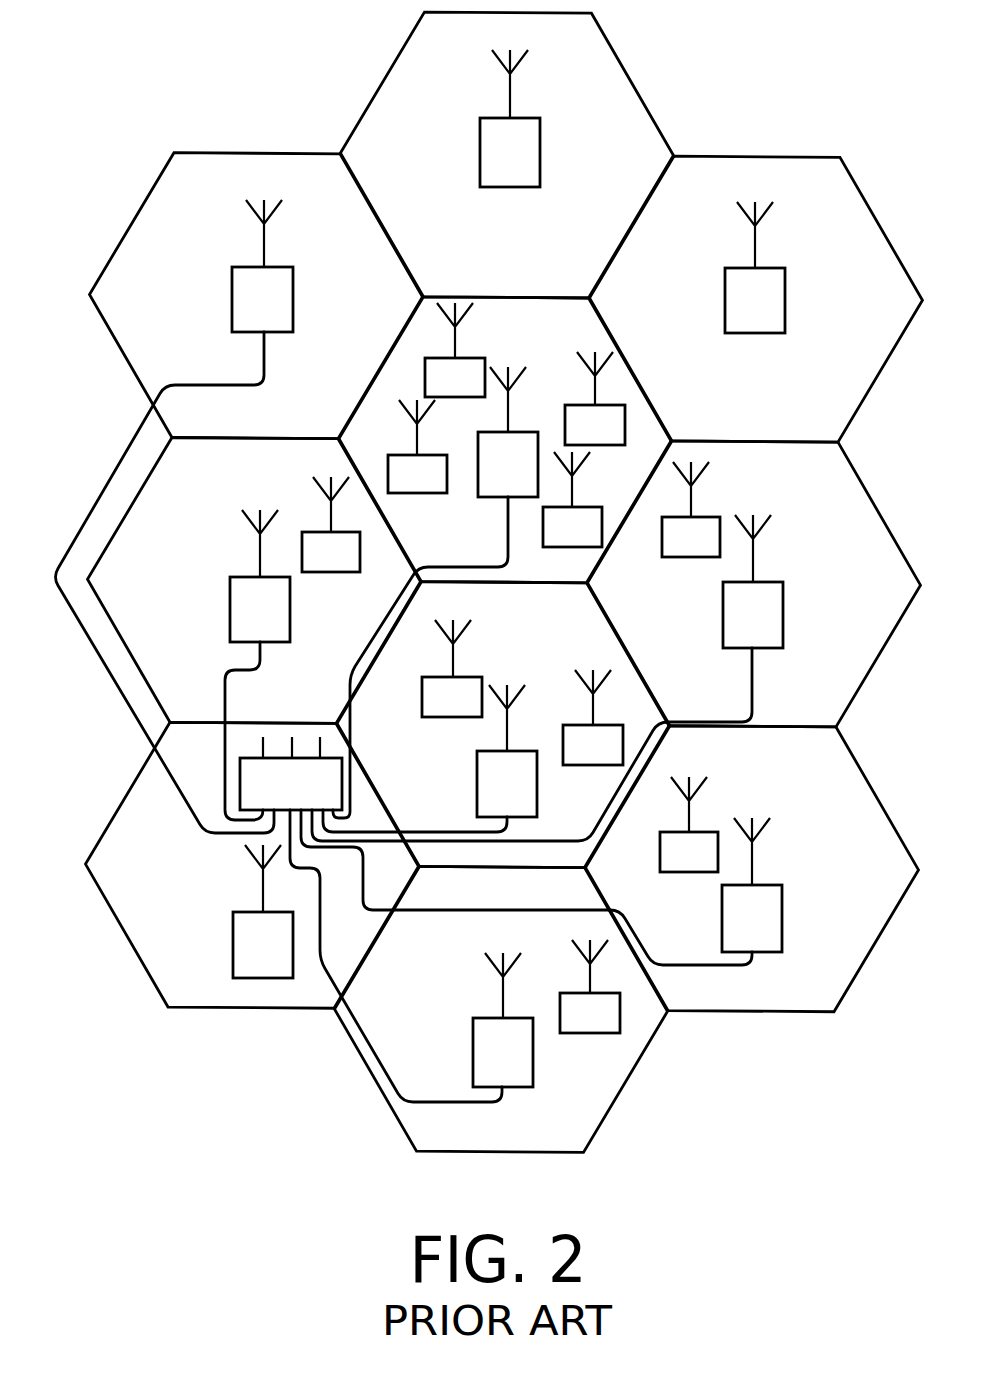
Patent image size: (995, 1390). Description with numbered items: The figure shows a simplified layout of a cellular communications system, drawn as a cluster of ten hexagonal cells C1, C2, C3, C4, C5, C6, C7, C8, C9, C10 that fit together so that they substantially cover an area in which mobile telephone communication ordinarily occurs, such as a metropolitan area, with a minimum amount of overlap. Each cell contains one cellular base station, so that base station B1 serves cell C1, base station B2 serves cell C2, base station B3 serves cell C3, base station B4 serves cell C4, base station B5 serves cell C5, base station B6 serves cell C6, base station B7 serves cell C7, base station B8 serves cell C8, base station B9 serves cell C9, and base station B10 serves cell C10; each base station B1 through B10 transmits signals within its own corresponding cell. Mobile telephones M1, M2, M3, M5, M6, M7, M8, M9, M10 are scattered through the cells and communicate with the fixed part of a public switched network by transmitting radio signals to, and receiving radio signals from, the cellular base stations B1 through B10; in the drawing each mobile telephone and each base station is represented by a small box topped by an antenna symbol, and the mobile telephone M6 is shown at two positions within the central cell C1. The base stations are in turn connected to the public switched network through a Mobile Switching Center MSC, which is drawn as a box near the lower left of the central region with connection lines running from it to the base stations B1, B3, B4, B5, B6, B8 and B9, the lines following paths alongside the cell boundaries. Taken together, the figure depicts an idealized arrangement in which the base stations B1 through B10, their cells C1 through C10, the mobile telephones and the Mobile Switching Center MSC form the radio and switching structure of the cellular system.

The cell C1 is at (467, 559).
The cell C2 is at (713, 431).
The cell C3 is at (707, 708).
The cell C4 is at (443, 816).
The cell C5 is at (214, 708).
The cell C6 is at (220, 424).
The cell C7 is at (468, 282).
The cell C8 is at (710, 997).
The cell C9 is at (461, 1137).
The cell C10 is at (223, 994).
The cellular base station B1 is at (508, 432).
The cellular base station B2 is at (755, 267).
The cellular base station B3 is at (753, 581).
The cellular base station B4 is at (507, 751).
The cellular base station B5 is at (260, 576).
The cellular base station B6 is at (262, 266).
The cellular base station B7 is at (510, 118).
The cellular base station B8 is at (752, 885).
The cellular base station B9 is at (503, 1020).
The cellular base station B10 is at (263, 911).
The mobile telephone M1 is at (689, 824).
The mobile telephone M2 is at (331, 524).
The mobile telephone M3 is at (417, 446).
The mobile telephone M5 is at (691, 509).
The mobile telephone M6 is at (525, 374).
The mobile telephone M7 is at (572, 499).
The mobile telephone M8 is at (593, 717).
The mobile telephone M9 is at (452, 668).
The mobile telephone M10 is at (590, 986).
The Mobile Switching Center MSC is at (291, 773).